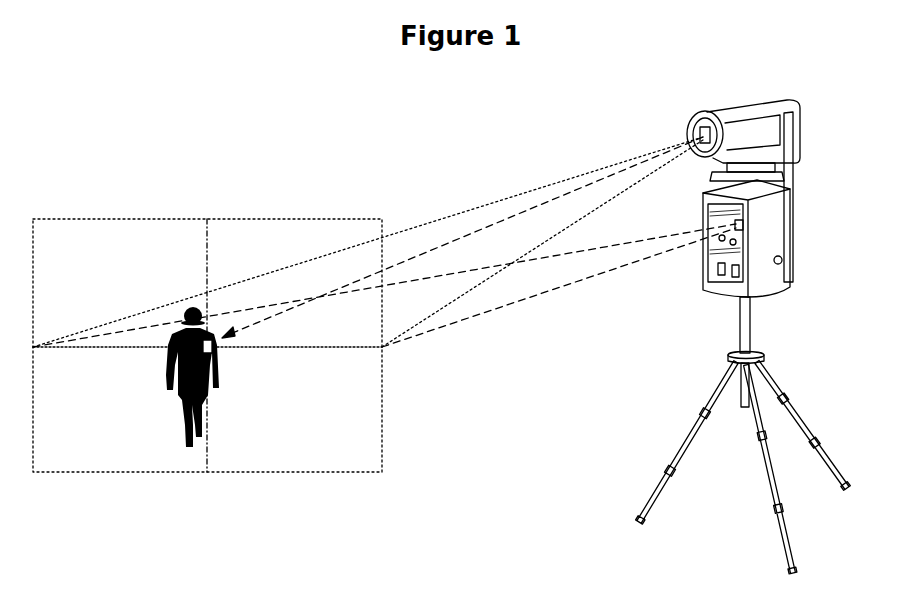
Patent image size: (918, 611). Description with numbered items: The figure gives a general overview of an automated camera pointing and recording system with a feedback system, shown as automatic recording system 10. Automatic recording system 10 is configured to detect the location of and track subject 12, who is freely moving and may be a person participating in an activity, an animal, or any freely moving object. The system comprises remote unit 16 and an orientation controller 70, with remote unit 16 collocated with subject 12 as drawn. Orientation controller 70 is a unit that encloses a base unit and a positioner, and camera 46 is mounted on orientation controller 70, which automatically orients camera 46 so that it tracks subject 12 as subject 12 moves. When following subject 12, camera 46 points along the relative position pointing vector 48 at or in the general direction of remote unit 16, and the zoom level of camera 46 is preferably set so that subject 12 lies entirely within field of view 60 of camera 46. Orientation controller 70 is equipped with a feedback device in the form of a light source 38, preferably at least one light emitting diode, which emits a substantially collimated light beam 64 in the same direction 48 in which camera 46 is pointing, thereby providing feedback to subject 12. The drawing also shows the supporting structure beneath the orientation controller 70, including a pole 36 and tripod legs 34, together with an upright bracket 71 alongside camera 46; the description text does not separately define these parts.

The automatic recording system 10 is at (412, 562).
The subject 12 is at (178, 336).
The remote unit 16 is at (212, 352).
The tripod legs 34 is at (803, 420).
The tripod pole / column 36 is at (752, 322).
The light source 38 is at (748, 228).
The camera 46 is at (741, 110).
The relative position pointing vector 48 is at (499, 218).
The field of view 60 is at (428, 208).
The collimated light beam 64 is at (588, 246).
The orientation controller 70 is at (780, 262).
The handle / mounting bracket 71 is at (793, 168).